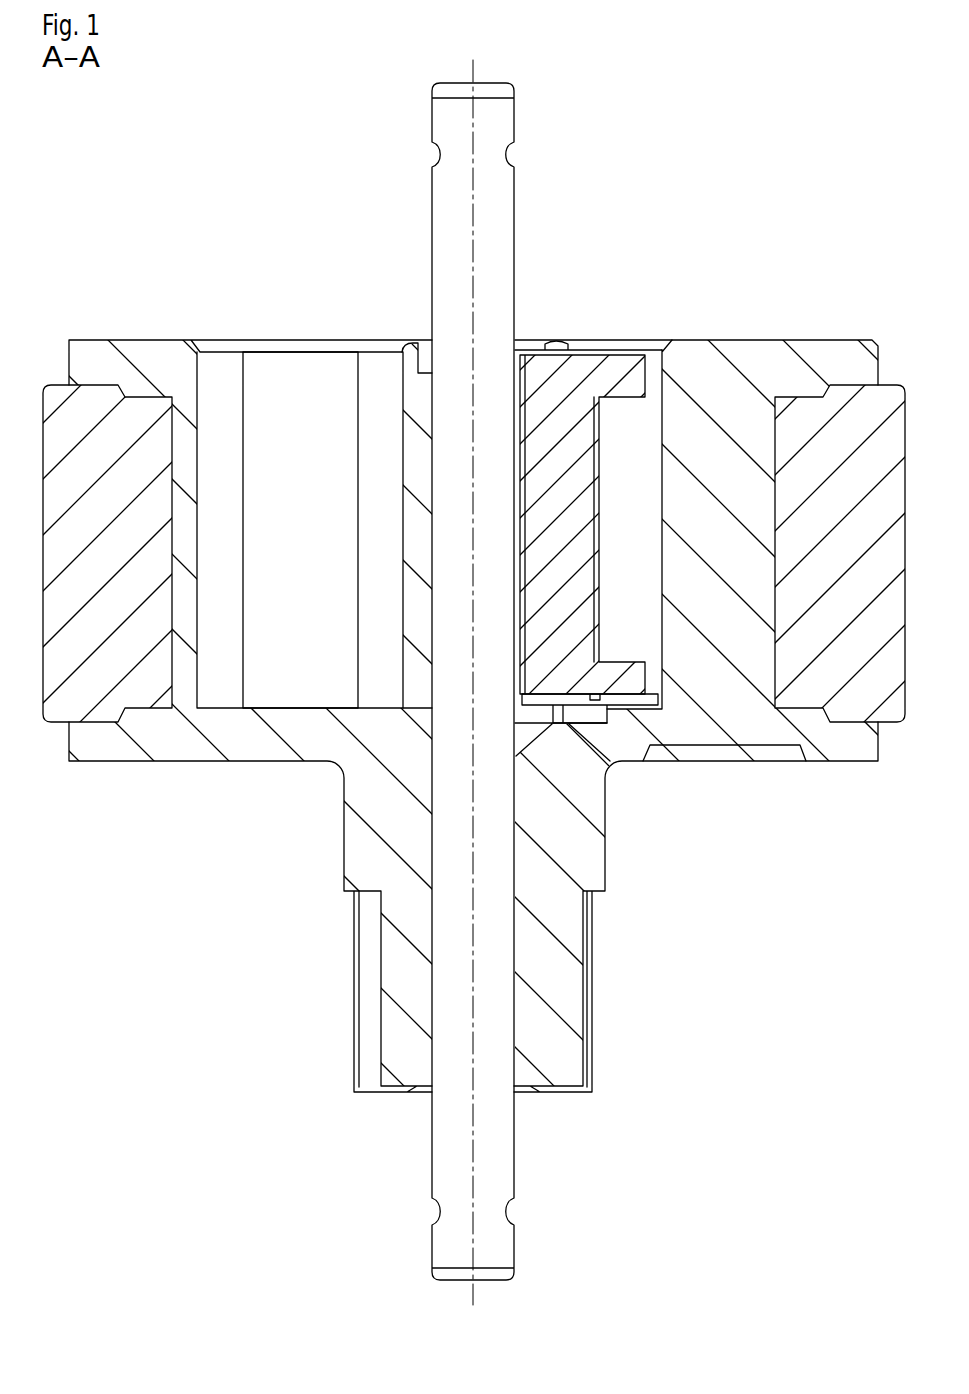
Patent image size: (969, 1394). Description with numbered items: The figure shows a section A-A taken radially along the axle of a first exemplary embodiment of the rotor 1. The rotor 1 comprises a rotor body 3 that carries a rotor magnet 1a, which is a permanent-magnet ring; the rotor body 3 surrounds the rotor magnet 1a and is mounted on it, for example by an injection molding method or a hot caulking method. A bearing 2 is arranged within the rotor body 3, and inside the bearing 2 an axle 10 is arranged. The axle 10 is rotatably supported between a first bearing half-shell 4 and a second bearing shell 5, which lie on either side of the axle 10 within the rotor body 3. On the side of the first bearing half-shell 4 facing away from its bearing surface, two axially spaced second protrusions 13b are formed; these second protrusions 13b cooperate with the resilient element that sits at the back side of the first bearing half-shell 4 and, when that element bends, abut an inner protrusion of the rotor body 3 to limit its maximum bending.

The rotor 1 is at (247, 173).
The rotor magnet 1a is at (830, 450).
The bearing 2 is at (416, 571).
The rotor body 3 is at (172, 739).
The first bearing half-shell 4 is at (533, 440).
The second bearing shell 5 is at (418, 440).
The axle 10 is at (502, 257).
The second protrusions 13b is at (633, 373).